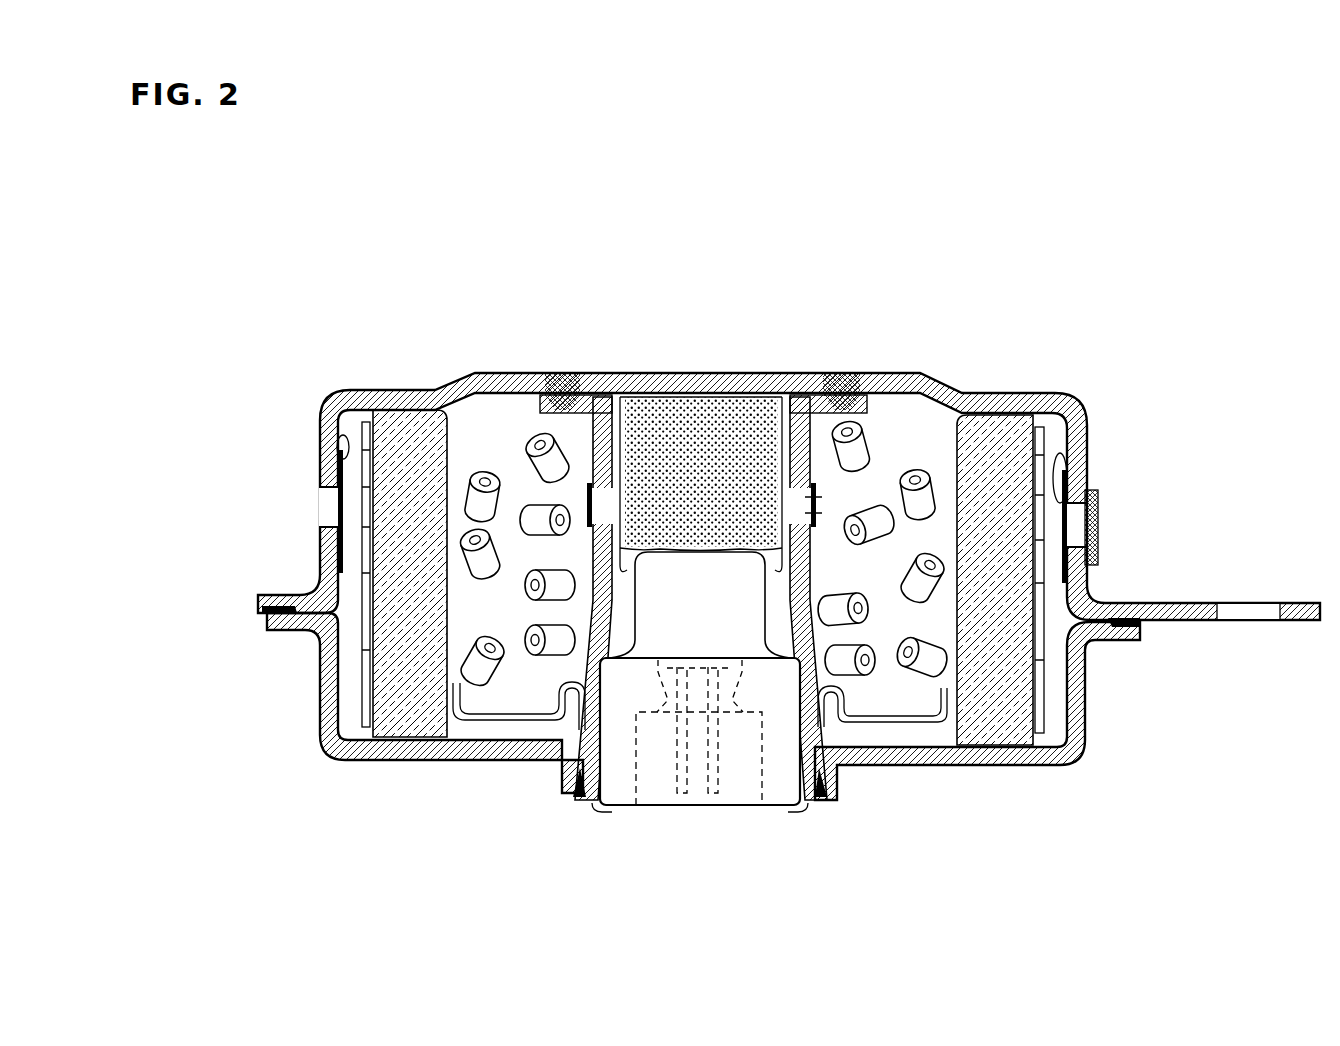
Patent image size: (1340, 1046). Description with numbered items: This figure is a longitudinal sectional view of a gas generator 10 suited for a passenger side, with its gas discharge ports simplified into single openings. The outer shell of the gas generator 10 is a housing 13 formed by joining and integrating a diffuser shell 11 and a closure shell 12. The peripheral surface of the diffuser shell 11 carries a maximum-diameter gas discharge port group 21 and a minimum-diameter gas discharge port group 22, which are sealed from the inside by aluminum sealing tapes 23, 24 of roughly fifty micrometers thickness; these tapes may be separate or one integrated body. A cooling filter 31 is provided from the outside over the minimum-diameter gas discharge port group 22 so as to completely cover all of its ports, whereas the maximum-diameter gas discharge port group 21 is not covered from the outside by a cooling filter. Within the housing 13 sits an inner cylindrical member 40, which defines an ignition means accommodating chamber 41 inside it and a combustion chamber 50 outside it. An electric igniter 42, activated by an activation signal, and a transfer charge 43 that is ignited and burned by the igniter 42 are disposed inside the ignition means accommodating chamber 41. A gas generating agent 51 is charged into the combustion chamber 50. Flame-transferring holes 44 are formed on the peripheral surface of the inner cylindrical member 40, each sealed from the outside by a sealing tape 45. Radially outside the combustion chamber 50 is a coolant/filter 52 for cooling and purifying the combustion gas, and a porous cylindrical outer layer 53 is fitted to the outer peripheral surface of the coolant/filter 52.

The gas generator 10 is at (717, 497).
The diffuser shell 11 is at (323, 557).
The closure shell 12 is at (320, 668).
The housing 13 is at (717, 586).
The maximum-diameter gas discharge port group 21 is at (330, 507).
The minimum-diameter gas discharge port group 22 is at (1100, 505).
The sealing tape 23 is at (320, 425).
The sealing tape 24 is at (1068, 470).
The cooling filter 31 is at (1097, 548).
The inner cylindrical member 40 is at (590, 373).
The ignition means accommodating chamber 41 is at (567, 797).
The electric igniter 42 is at (718, 621).
The transfer charge 43 is at (700, 375).
The flame-transferring holes 44 is at (817, 523).
The sealing tape 45 is at (817, 493).
The combustion chamber 50 is at (520, 626).
The gas generating agent 51 is at (527, 455).
The coolant/filter 52 is at (392, 388).
The porous cylindrical outer layer 53 is at (1047, 695).